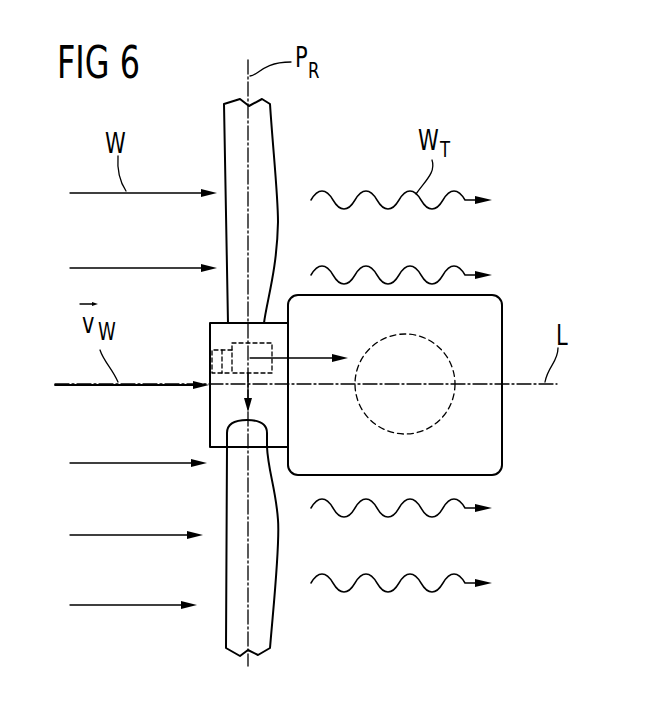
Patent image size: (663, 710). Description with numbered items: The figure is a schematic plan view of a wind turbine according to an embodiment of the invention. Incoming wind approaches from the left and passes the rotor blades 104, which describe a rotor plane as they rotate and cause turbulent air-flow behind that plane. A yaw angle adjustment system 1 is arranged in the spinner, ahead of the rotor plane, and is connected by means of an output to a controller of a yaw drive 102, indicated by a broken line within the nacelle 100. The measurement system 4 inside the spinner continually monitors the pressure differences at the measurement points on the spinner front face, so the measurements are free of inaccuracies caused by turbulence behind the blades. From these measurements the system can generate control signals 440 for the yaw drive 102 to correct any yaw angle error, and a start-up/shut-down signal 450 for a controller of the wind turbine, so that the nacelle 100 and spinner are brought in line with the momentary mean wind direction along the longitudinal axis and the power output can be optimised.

The yaw angle adjustment system 1 is at (217, 363).
The measurement system 4 is at (296, 367).
The nacelle 100 is at (432, 385).
The yaw drive 102 is at (375, 389).
The rotor blades 104 is at (286, 377).
The control signals 440 is at (333, 336).
The start-up/shut-down signal 450 is at (333, 336).